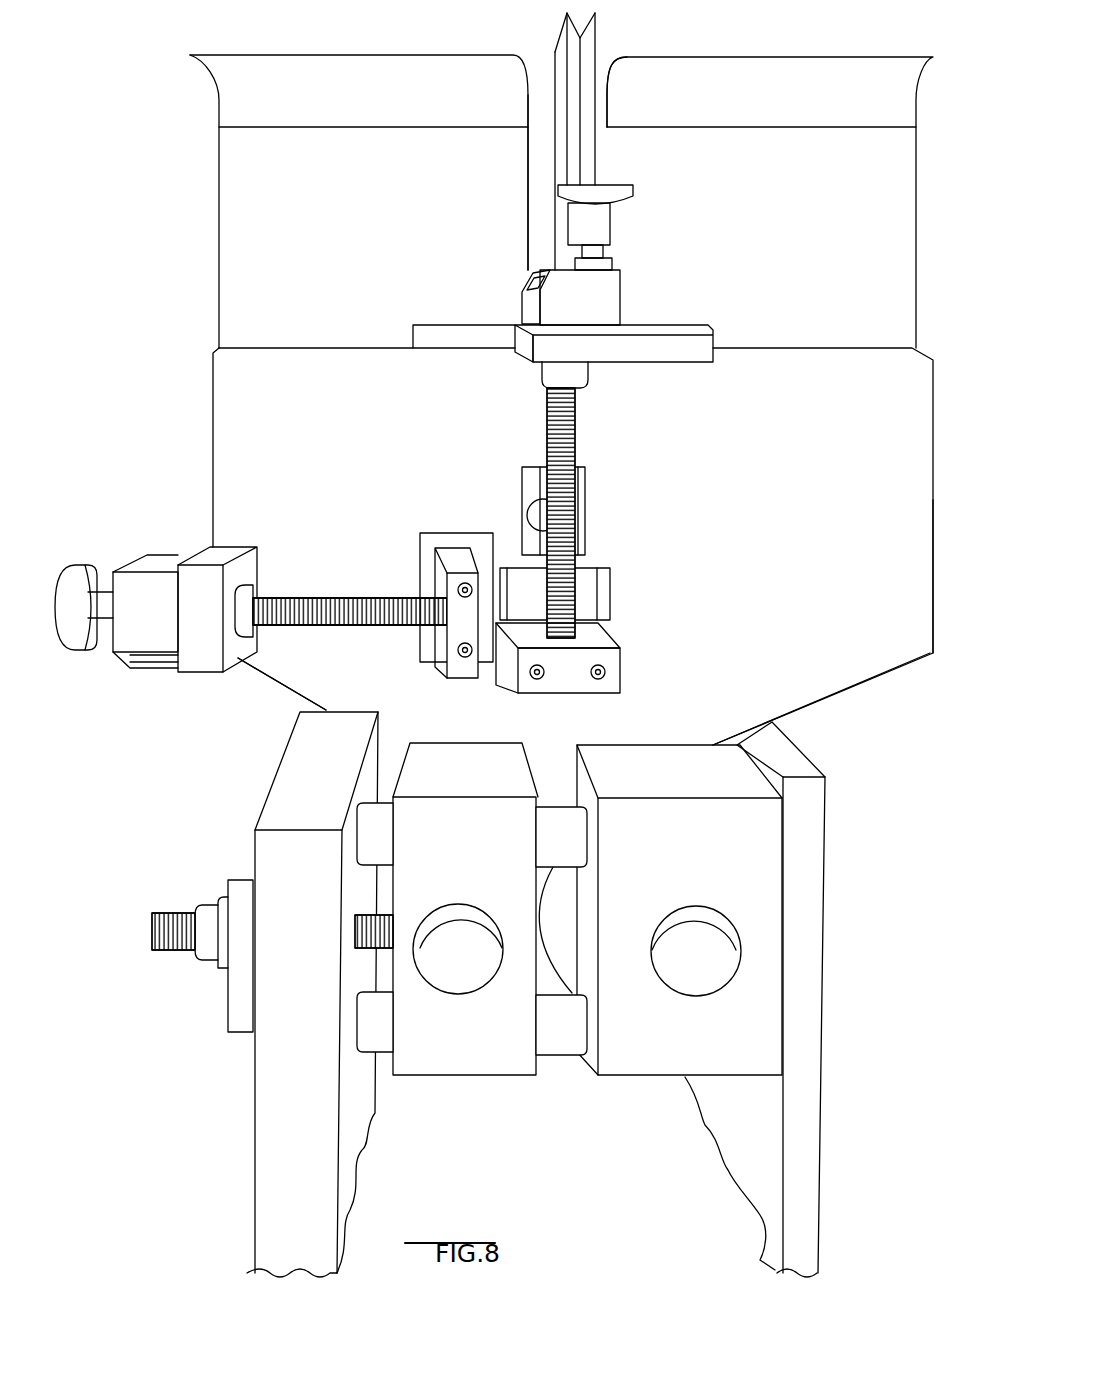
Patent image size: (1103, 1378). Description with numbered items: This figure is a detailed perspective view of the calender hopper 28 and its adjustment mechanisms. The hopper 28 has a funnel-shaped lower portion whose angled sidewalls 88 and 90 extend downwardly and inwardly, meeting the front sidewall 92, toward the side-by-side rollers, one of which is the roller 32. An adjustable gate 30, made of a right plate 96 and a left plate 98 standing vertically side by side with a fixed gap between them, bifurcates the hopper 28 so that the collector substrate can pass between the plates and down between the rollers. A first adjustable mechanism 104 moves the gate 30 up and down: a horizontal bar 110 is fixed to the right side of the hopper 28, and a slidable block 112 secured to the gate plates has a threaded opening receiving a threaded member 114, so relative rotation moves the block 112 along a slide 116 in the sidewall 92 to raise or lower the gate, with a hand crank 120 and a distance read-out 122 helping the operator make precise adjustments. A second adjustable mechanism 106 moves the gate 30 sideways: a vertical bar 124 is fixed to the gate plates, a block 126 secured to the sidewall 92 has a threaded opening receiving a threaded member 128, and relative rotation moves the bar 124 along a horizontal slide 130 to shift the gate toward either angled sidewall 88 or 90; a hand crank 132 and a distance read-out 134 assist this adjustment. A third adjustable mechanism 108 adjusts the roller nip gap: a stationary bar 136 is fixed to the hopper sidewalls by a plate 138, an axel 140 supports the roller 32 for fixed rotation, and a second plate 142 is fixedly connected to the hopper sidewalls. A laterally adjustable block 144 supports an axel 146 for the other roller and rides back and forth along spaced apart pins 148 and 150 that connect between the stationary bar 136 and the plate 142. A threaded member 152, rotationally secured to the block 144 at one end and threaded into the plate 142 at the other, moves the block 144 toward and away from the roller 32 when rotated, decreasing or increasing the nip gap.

The calender hopper 28 is at (940, 616).
The adjustable gate 30 is at (598, 43).
The roller 32 is at (555, 923).
The angled sidewall 88 is at (838, 697).
The angled sidewall 90 is at (292, 693).
The front sidewall 92 is at (810, 628).
The right plate 96 is at (610, 87).
The left plate 98 is at (555, 48).
The first adjustable mechanism 104 is at (602, 400).
The second adjustable mechanism 106 is at (303, 578).
The third adjustable mechanism 108 is at (193, 1000).
The horizontal bar 110 is at (665, 337).
The slidable block 112 is at (595, 640).
The threaded member 114 is at (587, 497).
The slide 116 is at (580, 583).
The hand crank 120 is at (612, 227).
The distance read-out 122 is at (528, 277).
The vertical bar 124 is at (458, 562).
The block 126 is at (227, 552).
The threaded member 128 is at (357, 597).
The horizontal slide 130 is at (447, 540).
The hand crank 132 is at (100, 590).
The distance read-out 134 is at (137, 622).
The stationary bar 136 is at (757, 875).
The plate 138 is at (807, 820).
The axel 140 is at (717, 965).
The second plate 142 is at (273, 868).
The laterally adjustable block 144 is at (488, 1065).
The axel 146 is at (460, 970).
The pin 148 is at (377, 833).
The pin 150 is at (383, 1018).
The threaded member 152 is at (393, 923).